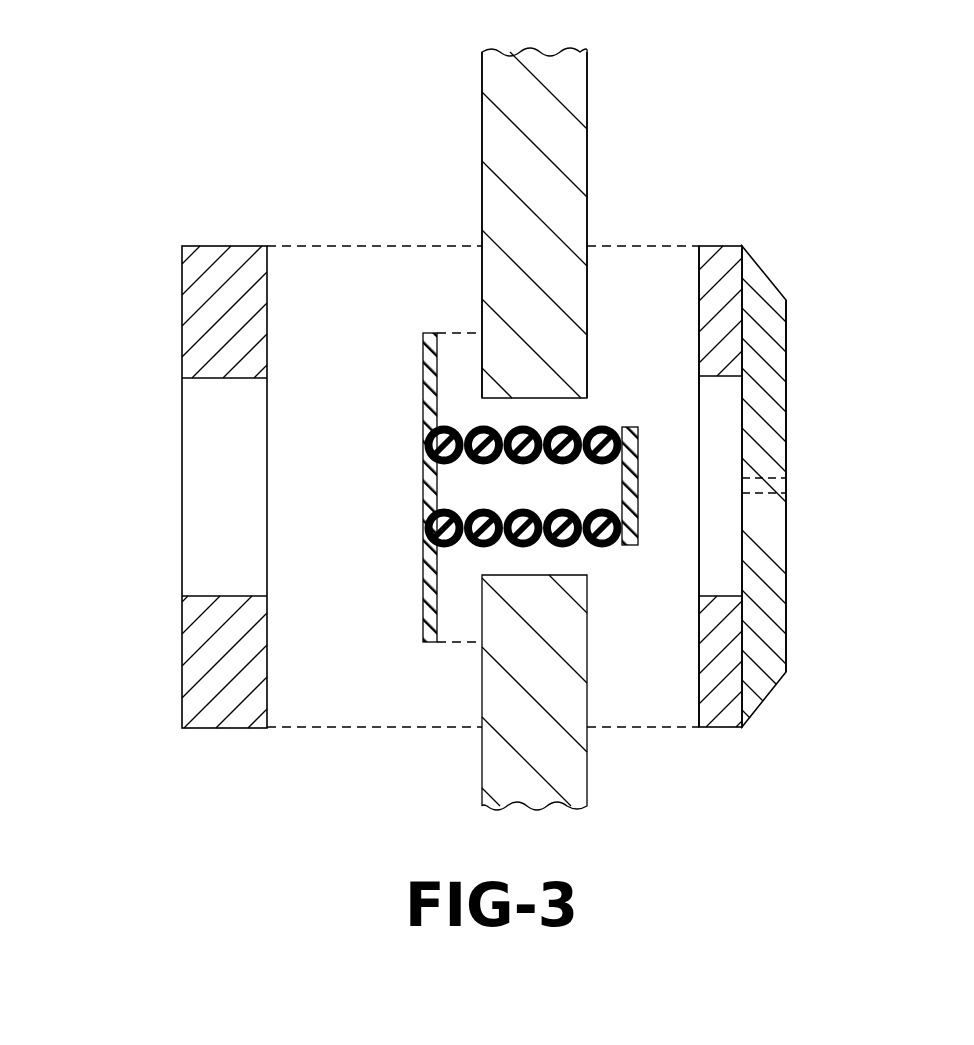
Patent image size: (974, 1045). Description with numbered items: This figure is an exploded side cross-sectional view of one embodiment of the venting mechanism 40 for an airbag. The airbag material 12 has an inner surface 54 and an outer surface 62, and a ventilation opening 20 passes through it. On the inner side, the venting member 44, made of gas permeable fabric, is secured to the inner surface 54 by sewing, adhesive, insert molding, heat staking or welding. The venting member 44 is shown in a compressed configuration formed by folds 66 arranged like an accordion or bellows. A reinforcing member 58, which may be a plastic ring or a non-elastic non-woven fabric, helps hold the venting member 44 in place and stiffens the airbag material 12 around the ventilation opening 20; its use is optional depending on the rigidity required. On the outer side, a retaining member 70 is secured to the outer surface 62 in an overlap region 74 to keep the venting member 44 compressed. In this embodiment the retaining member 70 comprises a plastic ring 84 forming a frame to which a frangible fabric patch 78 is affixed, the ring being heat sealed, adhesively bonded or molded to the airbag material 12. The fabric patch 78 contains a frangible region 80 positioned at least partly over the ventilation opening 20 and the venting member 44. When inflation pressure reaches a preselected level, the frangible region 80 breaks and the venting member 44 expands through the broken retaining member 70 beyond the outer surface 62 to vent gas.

The airbag material 12 is at (535, 128).
The outer surface 62 is at (587, 133).
The inner surface 54 is at (482, 205).
The overlap region 74 is at (698, 266).
The venting mechanism 40 is at (827, 169).
The reinforcing member 58 is at (225, 302).
The fabric patch 78 is at (760, 375).
The frangible region 80 is at (780, 485).
The venting member 44 is at (610, 430).
The folds 66 is at (590, 548).
The ventilation opening 20 is at (506, 575).
The plastic ring 84 is at (720, 668).
The retaining member 70 is at (740, 706).